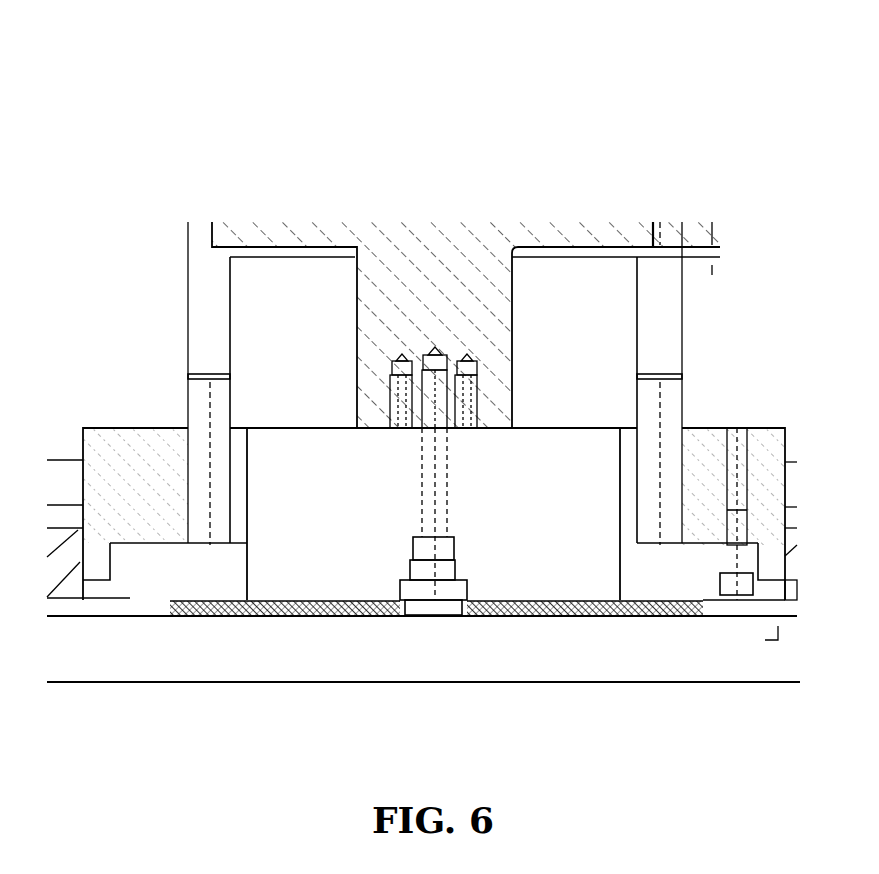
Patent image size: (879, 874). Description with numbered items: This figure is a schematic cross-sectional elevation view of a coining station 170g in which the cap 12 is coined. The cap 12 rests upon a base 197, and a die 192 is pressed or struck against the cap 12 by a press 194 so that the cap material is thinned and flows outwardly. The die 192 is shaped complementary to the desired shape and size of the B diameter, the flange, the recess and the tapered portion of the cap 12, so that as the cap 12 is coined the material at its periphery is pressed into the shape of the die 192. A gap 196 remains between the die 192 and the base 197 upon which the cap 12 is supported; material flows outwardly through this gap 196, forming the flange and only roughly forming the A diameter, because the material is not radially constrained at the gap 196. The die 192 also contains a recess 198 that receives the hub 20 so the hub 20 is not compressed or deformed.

The coining station 170g is at (469, 142).
The press 194 is at (231, 230).
The die 192 is at (155, 558).
The hub 20 is at (407, 603).
The recess 198 is at (473, 600).
The gap 196 is at (158, 605).
The cap 12 is at (623, 612).
The base 197 is at (248, 665).